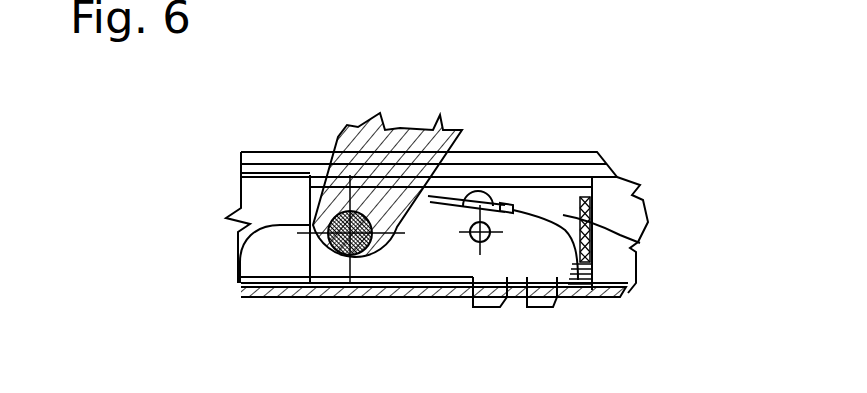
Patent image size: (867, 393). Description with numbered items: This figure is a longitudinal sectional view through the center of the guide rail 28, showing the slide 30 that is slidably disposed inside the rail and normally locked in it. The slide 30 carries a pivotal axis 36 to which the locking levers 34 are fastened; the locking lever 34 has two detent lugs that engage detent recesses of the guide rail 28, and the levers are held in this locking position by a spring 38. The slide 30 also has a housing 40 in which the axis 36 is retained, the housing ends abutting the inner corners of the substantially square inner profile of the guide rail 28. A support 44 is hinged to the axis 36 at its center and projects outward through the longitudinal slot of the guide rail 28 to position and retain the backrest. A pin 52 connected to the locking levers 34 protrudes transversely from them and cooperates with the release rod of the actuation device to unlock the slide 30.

The guide rail 28 is at (620, 292).
The slide 30 is at (601, 194).
The locking lever 34 is at (432, 215).
The pivotal axis 36 is at (238, 275).
The spring 38 is at (517, 203).
The housing 40 is at (640, 243).
The support 44 is at (345, 148).
The pin 52 is at (463, 233).